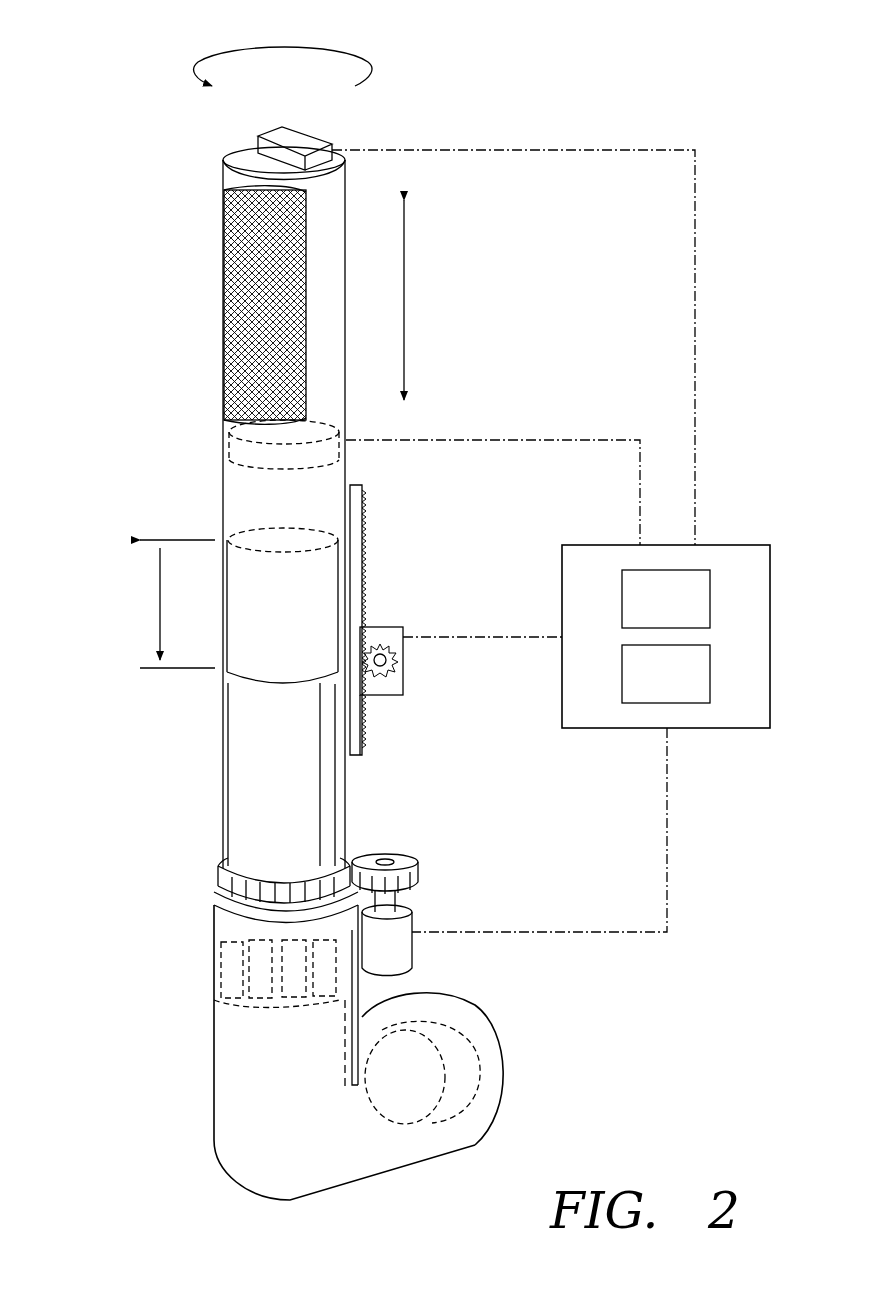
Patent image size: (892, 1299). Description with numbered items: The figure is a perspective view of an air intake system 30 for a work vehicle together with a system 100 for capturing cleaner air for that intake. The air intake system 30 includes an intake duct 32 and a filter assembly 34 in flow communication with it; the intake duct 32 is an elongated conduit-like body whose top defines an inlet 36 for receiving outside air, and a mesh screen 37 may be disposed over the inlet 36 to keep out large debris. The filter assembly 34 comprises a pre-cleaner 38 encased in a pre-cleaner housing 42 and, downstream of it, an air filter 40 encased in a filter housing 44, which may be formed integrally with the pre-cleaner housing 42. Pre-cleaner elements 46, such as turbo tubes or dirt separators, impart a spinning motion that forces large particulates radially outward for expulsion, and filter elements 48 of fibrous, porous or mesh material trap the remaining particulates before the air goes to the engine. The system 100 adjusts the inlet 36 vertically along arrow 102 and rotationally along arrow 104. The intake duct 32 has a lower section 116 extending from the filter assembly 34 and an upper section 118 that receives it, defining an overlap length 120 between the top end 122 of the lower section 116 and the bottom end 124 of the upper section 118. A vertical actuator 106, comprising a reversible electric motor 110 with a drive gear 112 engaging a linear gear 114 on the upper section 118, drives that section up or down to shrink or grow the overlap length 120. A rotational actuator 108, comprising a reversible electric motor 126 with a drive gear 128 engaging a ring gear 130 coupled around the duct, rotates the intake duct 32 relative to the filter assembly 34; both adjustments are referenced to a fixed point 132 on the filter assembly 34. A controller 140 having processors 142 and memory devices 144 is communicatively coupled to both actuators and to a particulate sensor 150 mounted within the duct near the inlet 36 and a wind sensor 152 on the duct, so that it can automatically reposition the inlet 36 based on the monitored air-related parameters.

The air intake system 30 is at (122, 145).
The intake duct 32 is at (215, 705).
The filter assembly 34 is at (188, 1130).
The inlet 36 is at (222, 242).
The mesh screen 37 is at (224, 318).
The pre-cleaner 38 is at (245, 1030).
The air filter 40 is at (492, 1110).
The pre-cleaner housing 42 is at (220, 935).
The filter housing 44 is at (375, 1178).
The pre-cleaner elements 46 is at (245, 1000).
The filter elements 48 is at (488, 1068).
The system for capturing cleaner air 100 is at (728, 458).
The arrow 102 is at (405, 312).
The arrow 104 is at (288, 50).
The vertical actuator 106 is at (388, 615).
The rotational actuator 108 is at (440, 900).
The reversible electric motor 110 is at (388, 700).
The drive gear 112 is at (402, 640).
The linear gear 114 is at (356, 538).
The lower section 116 is at (265, 745).
The upper section 118 is at (258, 502).
The overlap length 120 is at (158, 606).
The top end 122 is at (258, 527).
The bottom end 124 is at (255, 684).
The reversible electric motor 126 is at (413, 946).
The drive gear 128 is at (378, 858).
The ring gear 130 is at (228, 875).
The fixed point 132 is at (222, 905).
The controller 140 is at (730, 545).
The processors 142 is at (686, 616).
The memory devices 144 is at (686, 691).
The particulate sensor 150 is at (232, 465).
The wind sensor 152 is at (298, 140).